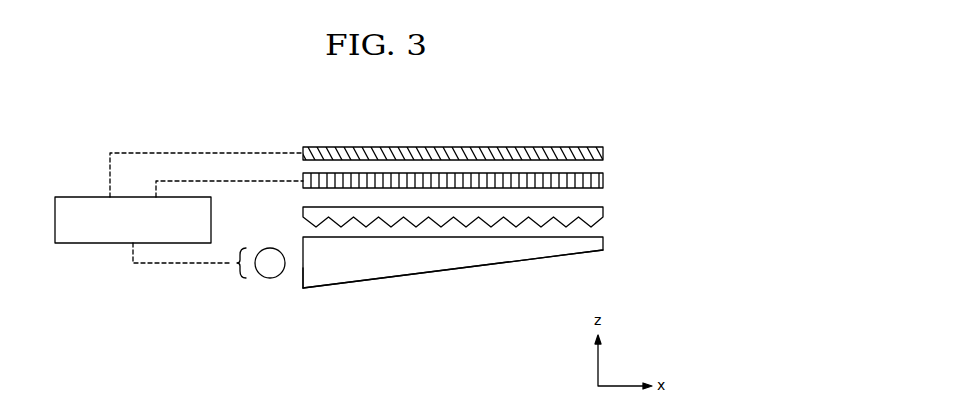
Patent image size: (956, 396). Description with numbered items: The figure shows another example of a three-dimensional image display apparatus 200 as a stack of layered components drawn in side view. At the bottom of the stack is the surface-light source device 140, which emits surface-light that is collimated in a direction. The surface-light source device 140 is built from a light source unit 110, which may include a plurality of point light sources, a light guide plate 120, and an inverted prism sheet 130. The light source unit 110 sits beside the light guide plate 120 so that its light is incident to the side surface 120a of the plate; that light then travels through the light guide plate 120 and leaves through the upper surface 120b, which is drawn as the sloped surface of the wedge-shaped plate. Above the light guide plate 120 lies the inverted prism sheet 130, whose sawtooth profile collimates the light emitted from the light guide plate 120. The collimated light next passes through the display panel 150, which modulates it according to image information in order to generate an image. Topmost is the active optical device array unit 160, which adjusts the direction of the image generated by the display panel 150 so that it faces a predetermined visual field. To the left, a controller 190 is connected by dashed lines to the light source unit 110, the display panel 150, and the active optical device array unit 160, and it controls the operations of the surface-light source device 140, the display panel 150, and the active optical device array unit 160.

The 3D image display apparatus 200 is at (588, 122).
The active optical device array unit 160 is at (603, 154).
The display panel 150 is at (603, 181).
The inverted prism sheet 130 is at (603, 213).
The light guide plate 120 is at (603, 243).
The side surface 120a is at (302, 268).
The upper surface 120b is at (520, 232).
The surface-light source device 140 is at (675, 205).
The light source unit 110 is at (251, 290).
The controller 190 is at (100, 243).